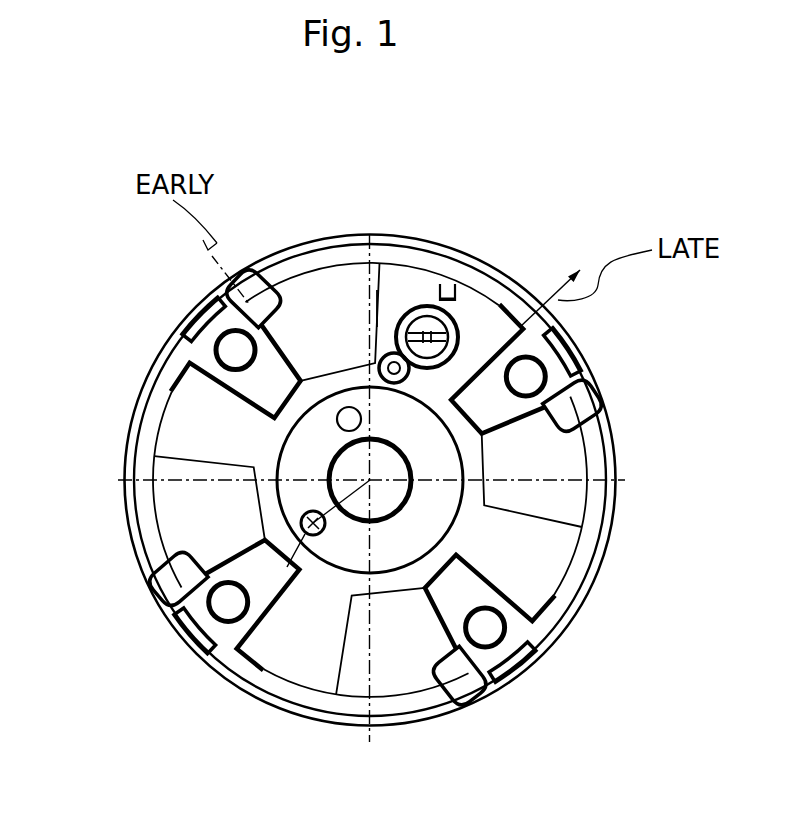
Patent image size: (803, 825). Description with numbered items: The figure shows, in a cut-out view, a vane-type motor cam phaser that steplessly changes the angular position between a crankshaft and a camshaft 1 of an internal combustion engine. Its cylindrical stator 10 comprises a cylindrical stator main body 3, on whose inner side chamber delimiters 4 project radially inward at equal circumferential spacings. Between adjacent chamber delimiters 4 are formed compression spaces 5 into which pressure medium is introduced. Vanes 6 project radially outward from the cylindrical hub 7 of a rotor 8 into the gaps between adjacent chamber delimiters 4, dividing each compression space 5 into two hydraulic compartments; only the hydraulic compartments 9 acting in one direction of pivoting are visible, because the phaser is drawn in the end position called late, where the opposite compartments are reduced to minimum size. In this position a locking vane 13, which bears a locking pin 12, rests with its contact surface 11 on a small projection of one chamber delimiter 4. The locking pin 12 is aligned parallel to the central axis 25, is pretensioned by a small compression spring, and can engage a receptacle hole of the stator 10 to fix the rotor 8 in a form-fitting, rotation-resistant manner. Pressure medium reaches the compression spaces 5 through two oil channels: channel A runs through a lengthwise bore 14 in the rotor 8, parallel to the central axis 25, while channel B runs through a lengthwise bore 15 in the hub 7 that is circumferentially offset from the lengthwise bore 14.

The camshaft 1 is at (390, 500).
The stator main body 3 is at (410, 258).
The chamber delimiter 4 is at (480, 592).
The compression space 5 is at (190, 522).
The vane 6 is at (198, 413).
The hub 7 is at (290, 450).
The rotor 8 is at (512, 546).
The hydraulic compartment 9 is at (320, 327).
The stator 10 is at (605, 378).
The contact surface 11 is at (581, 273).
The locking pin 12 is at (453, 337).
The locking vane 13 is at (383, 328).
The lengthwise bore 14 is at (349, 418).
The lengthwise bore 15 is at (314, 537).
The central axis 25 is at (243, 598).